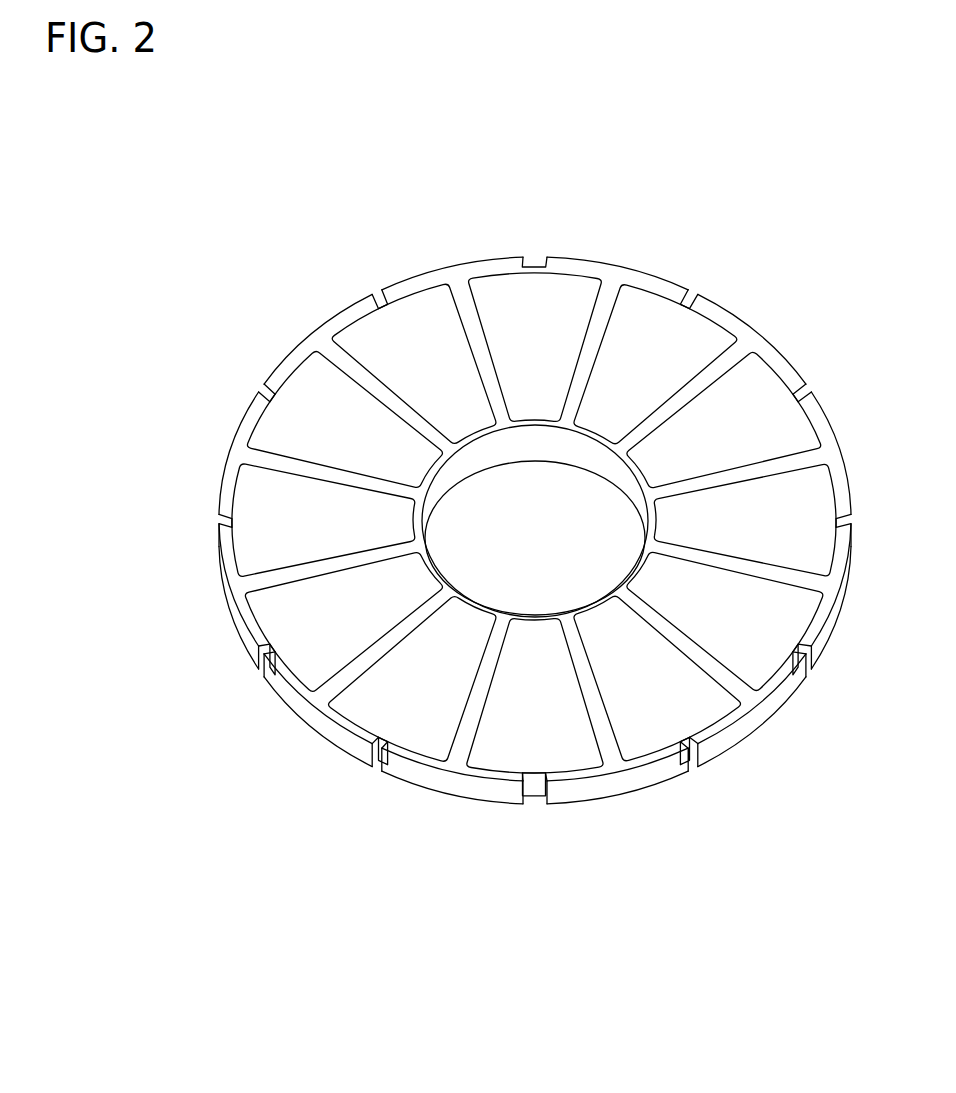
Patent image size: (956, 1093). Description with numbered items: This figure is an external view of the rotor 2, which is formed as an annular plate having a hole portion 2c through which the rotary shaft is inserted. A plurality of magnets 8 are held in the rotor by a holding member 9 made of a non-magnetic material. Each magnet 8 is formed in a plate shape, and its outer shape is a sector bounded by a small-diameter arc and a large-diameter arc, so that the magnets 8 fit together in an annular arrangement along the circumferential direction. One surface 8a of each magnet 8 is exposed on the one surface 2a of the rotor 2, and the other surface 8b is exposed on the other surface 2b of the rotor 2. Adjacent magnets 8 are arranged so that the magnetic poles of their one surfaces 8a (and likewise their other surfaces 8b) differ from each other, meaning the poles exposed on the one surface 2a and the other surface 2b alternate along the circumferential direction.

The rotor 2 is at (757, 258).
The one surface 2a is at (633, 295).
The other surface 2b is at (668, 809).
The hole portion 2c is at (477, 460).
The magnet 8 is at (321, 675).
The one surface 8a is at (302, 628).
The other surface 8b is at (532, 800).
The holding member 9 is at (487, 807).